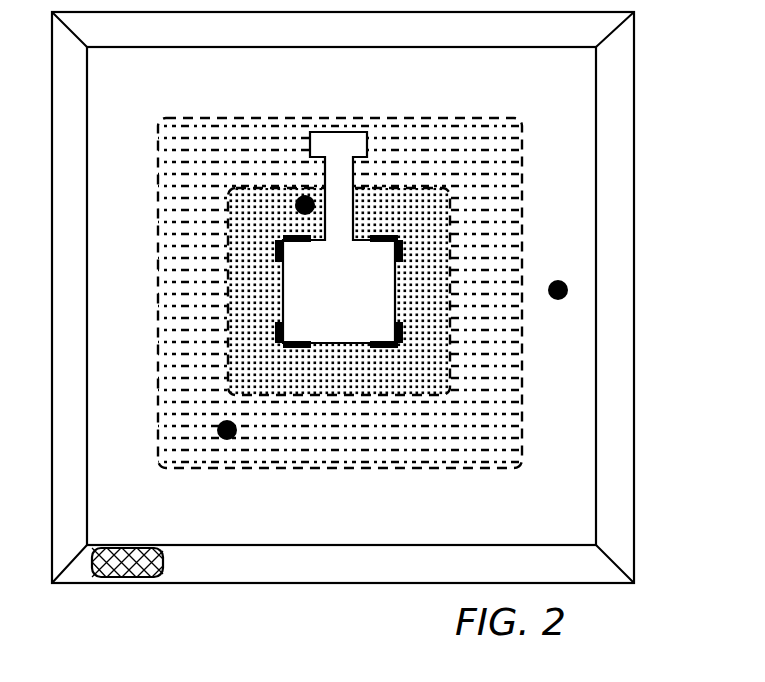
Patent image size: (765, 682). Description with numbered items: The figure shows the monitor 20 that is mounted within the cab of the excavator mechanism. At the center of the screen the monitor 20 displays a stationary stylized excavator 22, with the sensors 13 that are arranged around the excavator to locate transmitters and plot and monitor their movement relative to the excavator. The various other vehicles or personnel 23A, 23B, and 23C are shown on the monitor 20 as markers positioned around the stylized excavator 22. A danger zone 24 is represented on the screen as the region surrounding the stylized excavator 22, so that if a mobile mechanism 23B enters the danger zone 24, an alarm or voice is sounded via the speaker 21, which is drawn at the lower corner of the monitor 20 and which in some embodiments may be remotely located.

The monitor 20 is at (128, 47).
The speaker 21 is at (140, 578).
The stationary stylized excavator 22 is at (360, 306).
The sensors 13 is at (380, 240).
The vehicle or personnel 23A is at (227, 440).
The mobile mechanism 23B is at (302, 198).
The vehicle or personnel 23C is at (568, 288).
The danger zone 24 is at (248, 298).